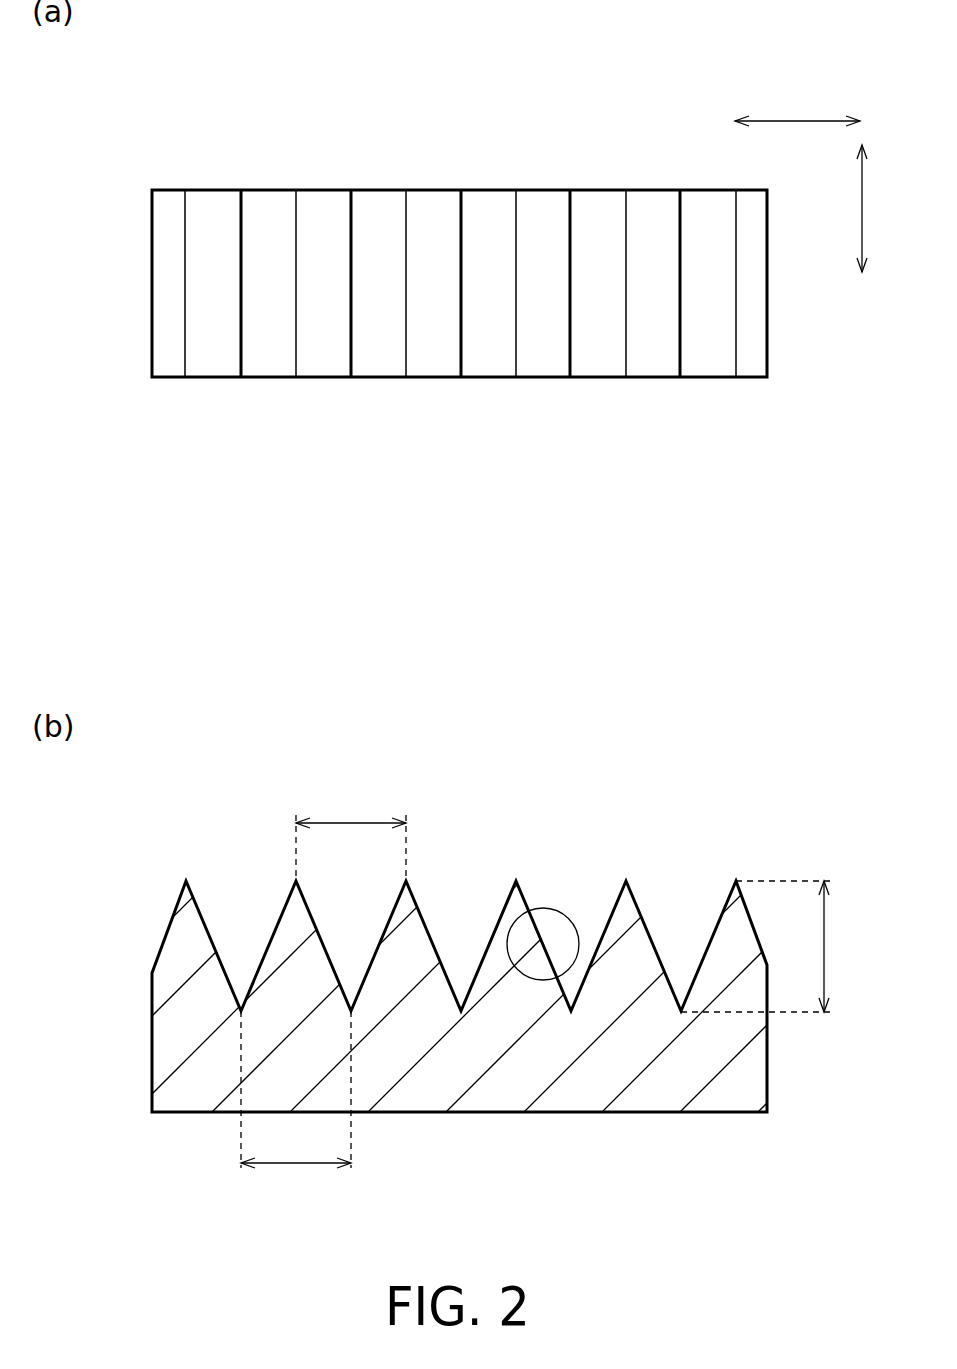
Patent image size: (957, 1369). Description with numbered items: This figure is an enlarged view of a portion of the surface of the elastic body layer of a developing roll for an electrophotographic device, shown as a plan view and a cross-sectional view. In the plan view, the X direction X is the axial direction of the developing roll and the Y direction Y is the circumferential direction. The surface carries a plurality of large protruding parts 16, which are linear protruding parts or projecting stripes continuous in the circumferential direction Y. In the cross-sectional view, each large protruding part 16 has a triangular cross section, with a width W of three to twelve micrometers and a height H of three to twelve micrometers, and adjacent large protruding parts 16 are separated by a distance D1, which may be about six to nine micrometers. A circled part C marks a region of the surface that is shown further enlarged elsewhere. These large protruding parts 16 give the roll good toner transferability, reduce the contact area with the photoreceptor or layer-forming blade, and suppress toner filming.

The large protruding part 16 is at (431, 362).
The part C is at (552, 909).
The X direction X is at (797, 104).
The Y direction Y is at (875, 208).
The distance D1 is at (351, 834).
The width W is at (296, 1105).
The height H is at (768, 946).